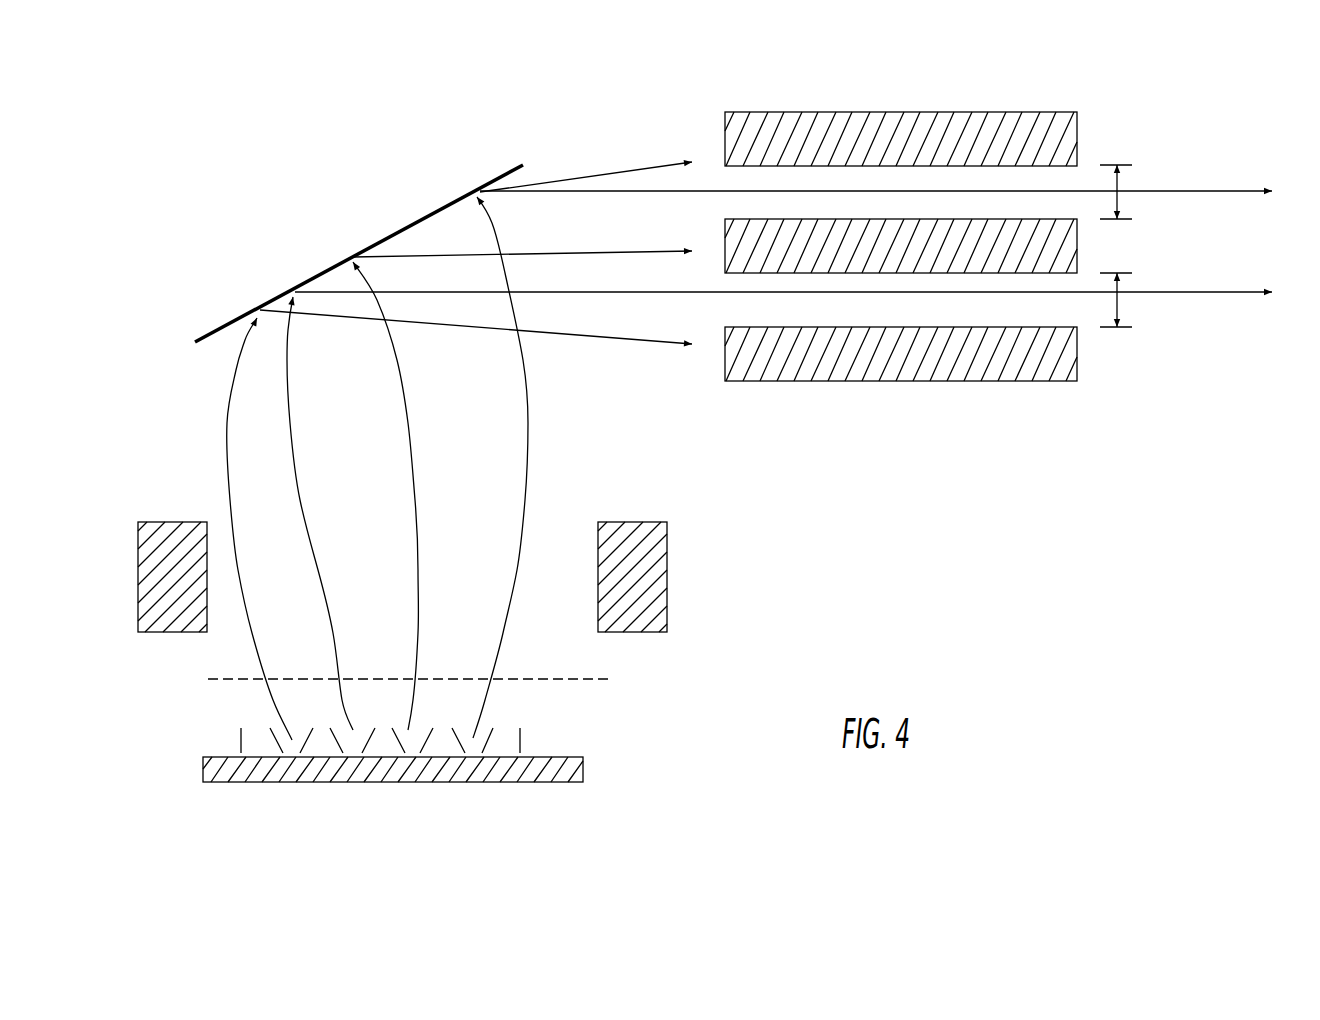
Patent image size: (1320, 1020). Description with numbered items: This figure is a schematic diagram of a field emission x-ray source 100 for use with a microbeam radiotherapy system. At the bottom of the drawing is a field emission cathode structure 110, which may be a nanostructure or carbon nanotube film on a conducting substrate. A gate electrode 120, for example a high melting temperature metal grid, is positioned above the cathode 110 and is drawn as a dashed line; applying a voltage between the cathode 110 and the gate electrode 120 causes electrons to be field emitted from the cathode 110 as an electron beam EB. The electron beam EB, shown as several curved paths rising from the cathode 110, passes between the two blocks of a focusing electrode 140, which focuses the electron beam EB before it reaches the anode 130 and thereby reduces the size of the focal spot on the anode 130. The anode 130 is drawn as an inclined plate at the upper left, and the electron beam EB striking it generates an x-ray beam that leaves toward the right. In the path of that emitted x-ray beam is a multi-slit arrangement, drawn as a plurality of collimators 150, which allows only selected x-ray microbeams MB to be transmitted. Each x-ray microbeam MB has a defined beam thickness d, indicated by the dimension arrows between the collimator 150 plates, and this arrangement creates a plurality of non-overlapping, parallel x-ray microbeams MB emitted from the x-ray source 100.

The field emission x-ray source 100 is at (950, 537).
The field emission cathode structure 110 is at (583, 769).
The gate electrode 120 is at (613, 679).
The anode 130 is at (270, 267).
The focusing electrode 140 is at (667, 573).
The microbeam collimator 150 is at (762, 102).
The electron beam EB is at (435, 445).
The x-ray microbeams MB is at (1238, 192).
The beam thickness d is at (1127, 232).